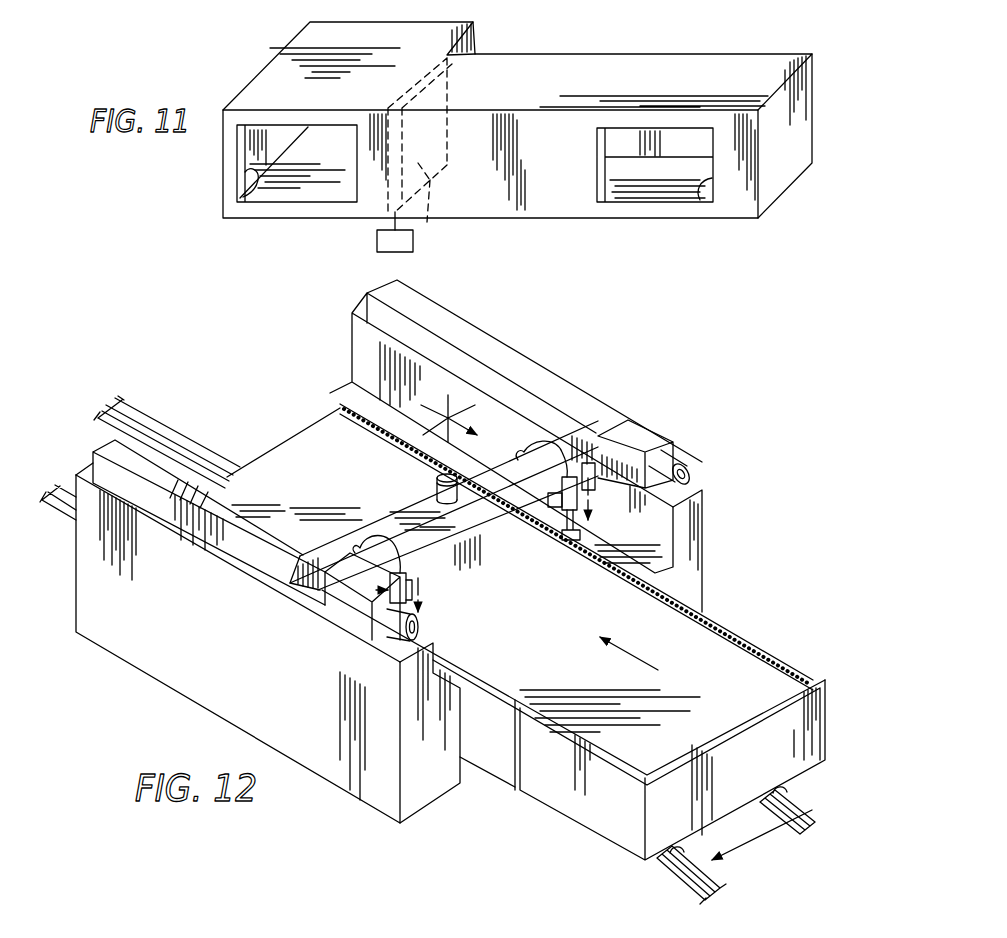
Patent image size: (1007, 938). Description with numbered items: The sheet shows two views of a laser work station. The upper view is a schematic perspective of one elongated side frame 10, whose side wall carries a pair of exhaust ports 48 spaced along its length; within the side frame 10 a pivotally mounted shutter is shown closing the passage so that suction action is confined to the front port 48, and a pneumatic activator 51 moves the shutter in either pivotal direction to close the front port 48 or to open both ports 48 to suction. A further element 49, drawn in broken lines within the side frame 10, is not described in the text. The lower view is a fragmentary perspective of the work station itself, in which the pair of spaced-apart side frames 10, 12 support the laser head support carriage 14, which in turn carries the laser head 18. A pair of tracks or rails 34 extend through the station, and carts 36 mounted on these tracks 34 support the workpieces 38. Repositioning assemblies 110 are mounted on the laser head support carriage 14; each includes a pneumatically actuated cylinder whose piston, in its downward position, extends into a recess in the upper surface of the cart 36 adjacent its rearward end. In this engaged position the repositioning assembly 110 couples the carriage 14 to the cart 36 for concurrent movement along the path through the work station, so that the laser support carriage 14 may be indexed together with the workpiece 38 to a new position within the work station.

In FIG. 11, the side frame 10 is at (655, 18).
In FIG. 11, the port 48 is at (243, 198).
In FIG. 11, the divider 49 is at (428, 220).
In FIG. 11, the pneumatic activator 51 is at (377, 243).
In FIG. 12, the side frame 12 is at (203, 638).
In FIG. 12, the laser head support carriage 14 is at (502, 470).
In FIG. 12, the laser head 18 is at (432, 487).
In FIG. 12, the track 34 is at (816, 820).
In FIG. 12, the cart 36 is at (830, 718).
In FIG. 12, the workpiece 38 is at (703, 682).
In FIG. 12, the repositioning assembly 110 is at (630, 426).